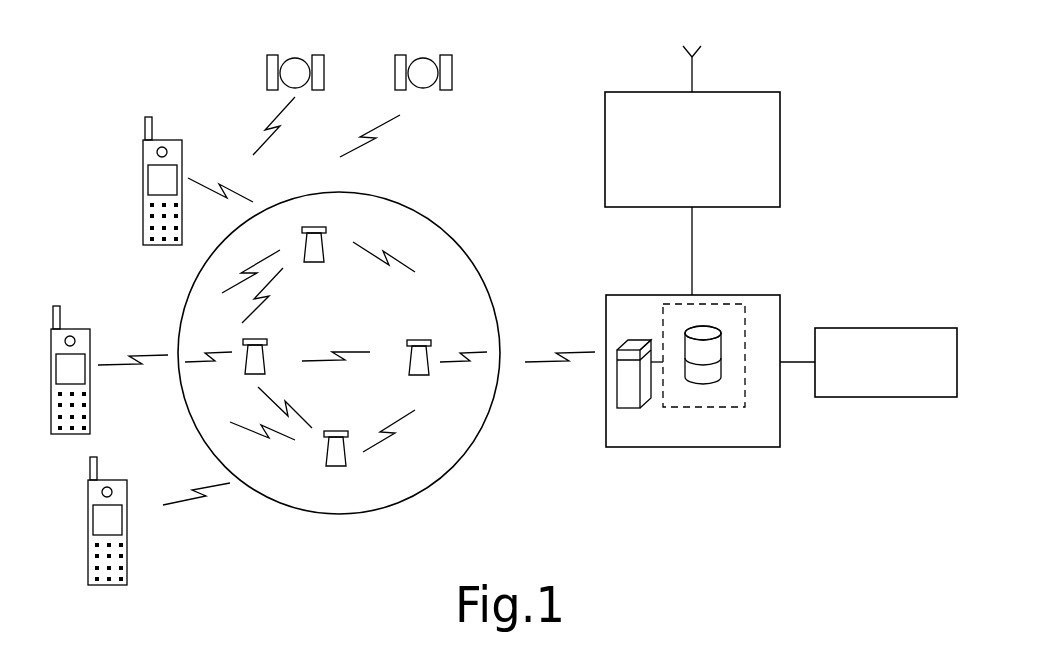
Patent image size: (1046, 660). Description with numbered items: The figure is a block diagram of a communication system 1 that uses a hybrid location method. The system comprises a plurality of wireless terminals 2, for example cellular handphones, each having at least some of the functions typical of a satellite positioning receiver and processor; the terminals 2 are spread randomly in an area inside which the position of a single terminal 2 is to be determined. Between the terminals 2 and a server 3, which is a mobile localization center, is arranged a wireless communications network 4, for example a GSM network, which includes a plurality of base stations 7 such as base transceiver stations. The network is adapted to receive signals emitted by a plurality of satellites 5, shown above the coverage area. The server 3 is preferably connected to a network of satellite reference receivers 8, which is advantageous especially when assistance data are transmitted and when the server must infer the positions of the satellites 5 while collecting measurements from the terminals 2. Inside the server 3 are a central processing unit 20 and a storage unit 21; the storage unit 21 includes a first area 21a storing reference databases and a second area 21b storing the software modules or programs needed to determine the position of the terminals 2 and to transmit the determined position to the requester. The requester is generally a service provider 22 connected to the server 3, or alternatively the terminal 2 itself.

The communication system 1 is at (127, 50).
The wireless terminals 2 is at (143, 215).
The server (mobile localization center, MLC) 3 is at (620, 300).
The wireless communications network 4 is at (418, 478).
The satellites 5 is at (293, 60).
The base stations 7 is at (312, 262).
The network of satellite reference receivers 8 is at (773, 165).
The central processing unit 20 is at (627, 383).
The storage unit 21 is at (707, 313).
The first area 21a is at (698, 372).
The second area 21b is at (713, 345).
The service provider 22 is at (828, 333).